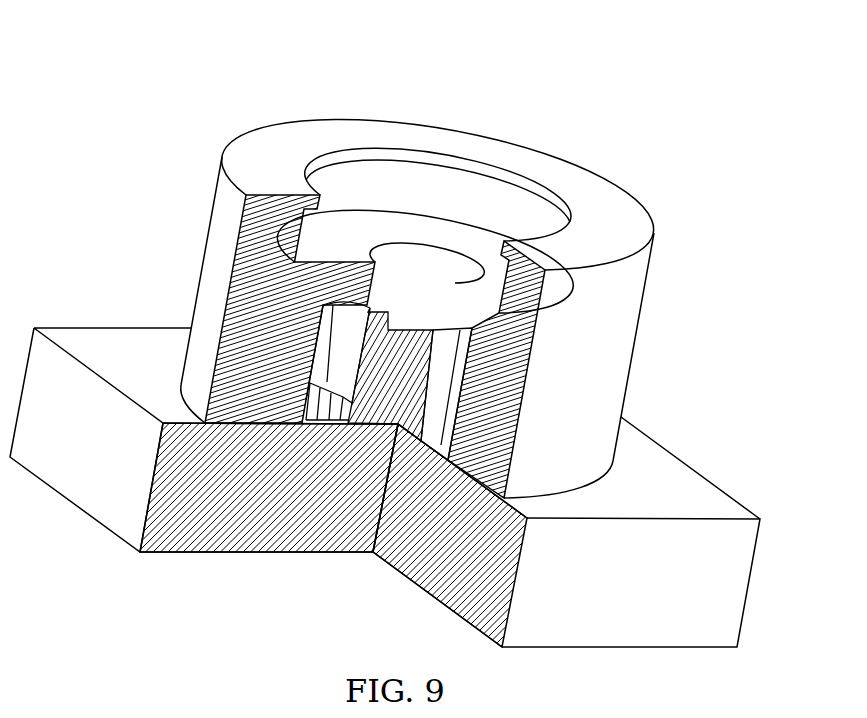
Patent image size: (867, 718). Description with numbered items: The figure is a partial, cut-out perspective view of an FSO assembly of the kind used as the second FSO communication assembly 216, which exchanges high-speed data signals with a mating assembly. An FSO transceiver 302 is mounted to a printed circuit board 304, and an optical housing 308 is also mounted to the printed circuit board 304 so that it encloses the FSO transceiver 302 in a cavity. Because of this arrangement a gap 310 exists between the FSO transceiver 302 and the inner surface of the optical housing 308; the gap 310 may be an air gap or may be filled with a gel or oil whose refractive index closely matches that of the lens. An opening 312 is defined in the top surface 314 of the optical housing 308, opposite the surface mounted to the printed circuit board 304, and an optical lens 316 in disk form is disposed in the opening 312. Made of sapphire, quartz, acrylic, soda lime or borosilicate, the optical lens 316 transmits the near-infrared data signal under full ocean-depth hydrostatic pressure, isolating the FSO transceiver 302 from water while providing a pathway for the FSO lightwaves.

The second FSO communication assembly 216 is at (93, 60).
The FSO transceiver 302 is at (362, 417).
The printed circuit board 304 is at (738, 582).
The optical housing 308 is at (617, 378).
The gap 310 is at (272, 223).
The opening 312 is at (627, 257).
The surface 314 is at (530, 163).
The optical lens 316 is at (417, 170).